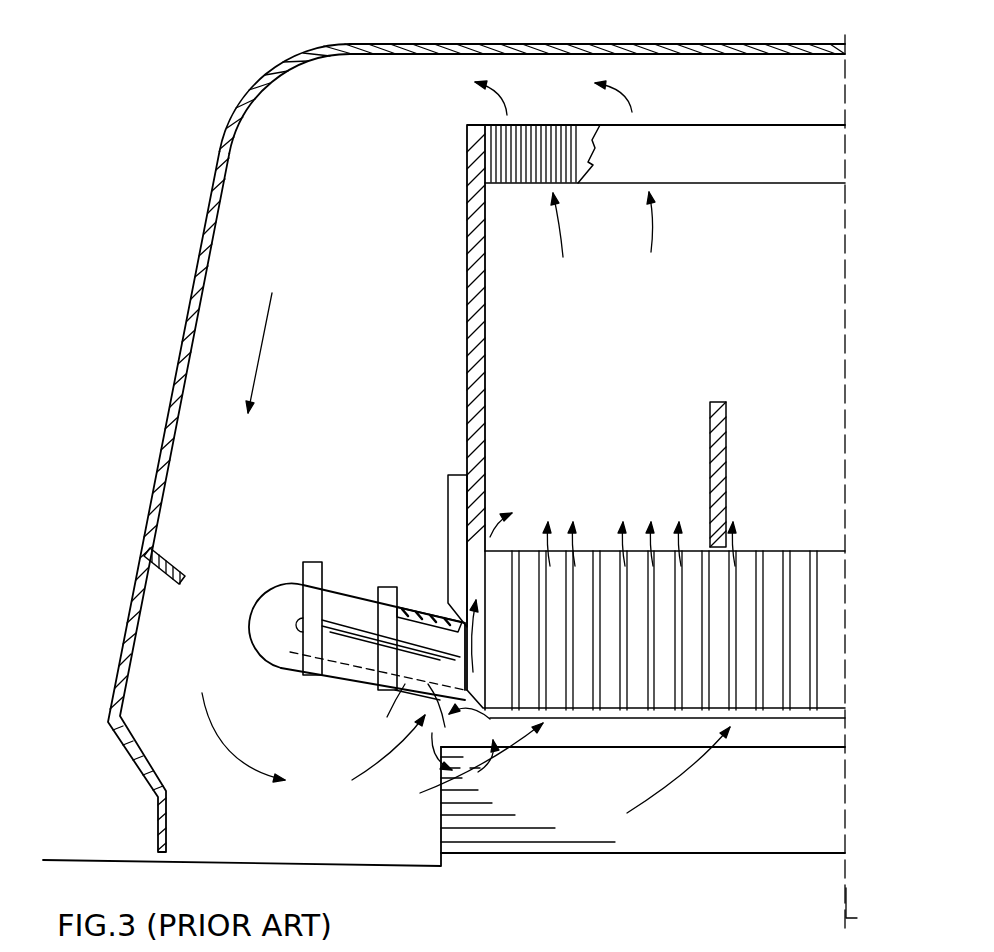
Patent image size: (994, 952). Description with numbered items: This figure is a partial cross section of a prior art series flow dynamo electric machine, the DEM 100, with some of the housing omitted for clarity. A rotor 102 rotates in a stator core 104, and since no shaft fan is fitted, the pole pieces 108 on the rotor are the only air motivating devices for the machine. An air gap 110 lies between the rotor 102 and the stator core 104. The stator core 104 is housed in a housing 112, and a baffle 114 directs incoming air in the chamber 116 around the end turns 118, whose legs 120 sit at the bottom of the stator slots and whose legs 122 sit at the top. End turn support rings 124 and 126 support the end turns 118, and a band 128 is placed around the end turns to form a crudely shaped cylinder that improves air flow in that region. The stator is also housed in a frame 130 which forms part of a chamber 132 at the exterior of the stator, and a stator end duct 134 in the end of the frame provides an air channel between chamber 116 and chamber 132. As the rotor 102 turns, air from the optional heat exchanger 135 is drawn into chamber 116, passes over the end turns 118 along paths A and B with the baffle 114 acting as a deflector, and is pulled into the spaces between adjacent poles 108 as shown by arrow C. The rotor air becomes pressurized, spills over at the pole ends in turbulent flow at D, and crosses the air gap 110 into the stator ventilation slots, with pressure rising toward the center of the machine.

The series flow DEM 100 is at (525, 918).
The rotor 102 is at (814, 878).
The stator core 104 is at (722, 618).
The pole pieces 108 is at (818, 805).
The air gap 110 is at (652, 710).
The housing 112 is at (400, 42).
The baffle 114 is at (160, 562).
The chamber 116 is at (227, 412).
The end turns 118 is at (280, 595).
The legs 120 is at (352, 705).
The legs 122 is at (405, 688).
The end turn support ring 124 is at (312, 562).
The end turn support ring 126 is at (386, 587).
The band 128 is at (430, 610).
The frame 130 is at (477, 327).
The chamber 132 is at (708, 327).
The stator end duct 134 is at (480, 576).
The heat exchanger 135 is at (686, 152).